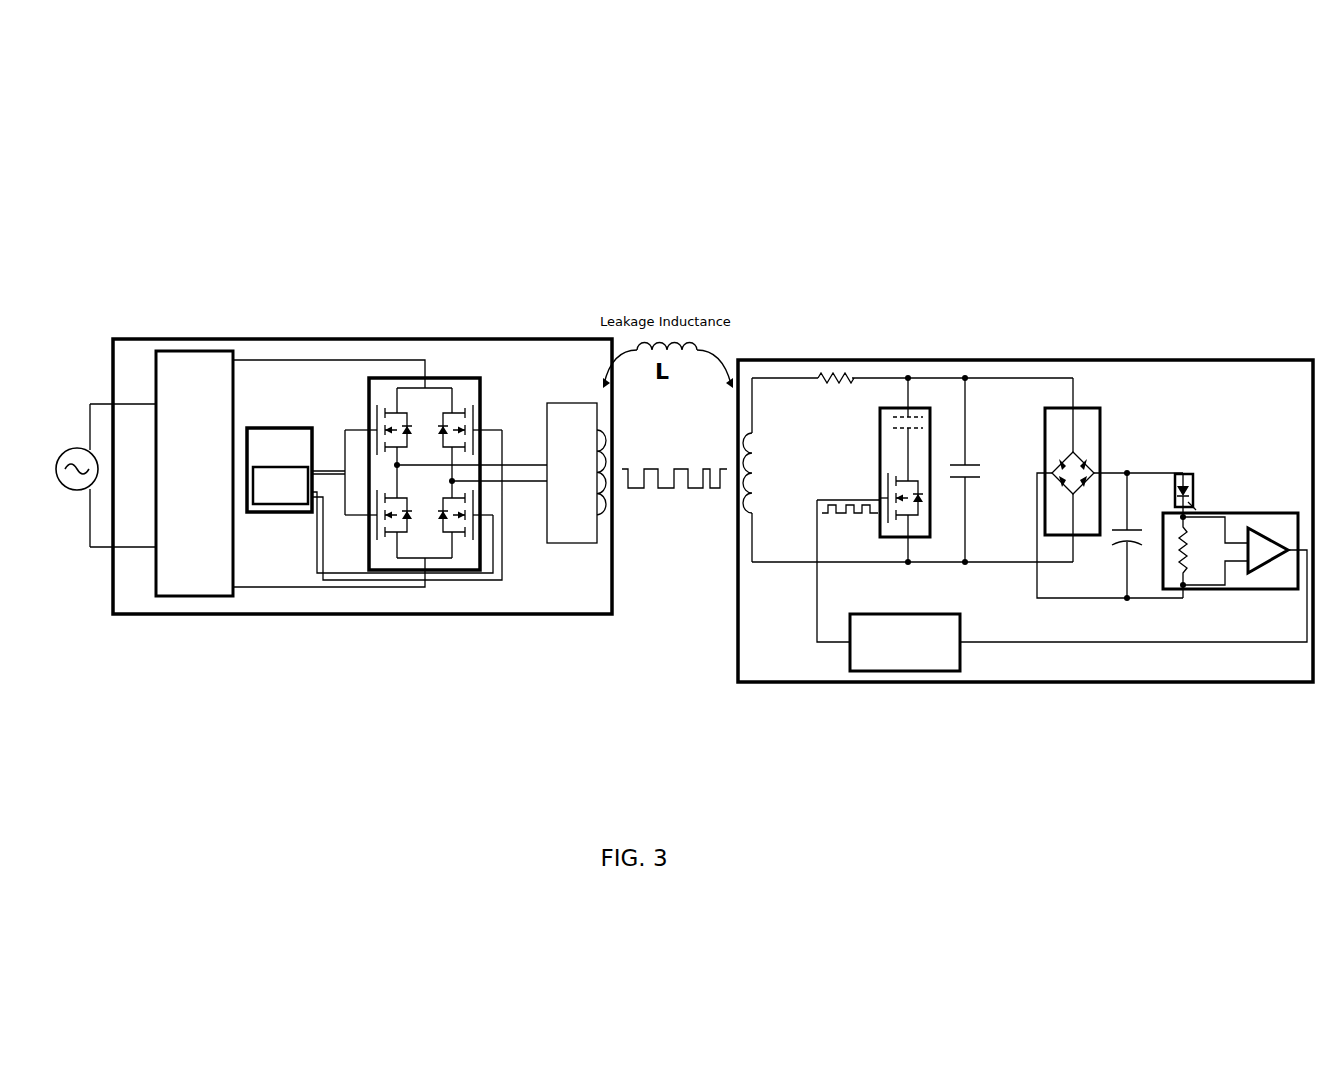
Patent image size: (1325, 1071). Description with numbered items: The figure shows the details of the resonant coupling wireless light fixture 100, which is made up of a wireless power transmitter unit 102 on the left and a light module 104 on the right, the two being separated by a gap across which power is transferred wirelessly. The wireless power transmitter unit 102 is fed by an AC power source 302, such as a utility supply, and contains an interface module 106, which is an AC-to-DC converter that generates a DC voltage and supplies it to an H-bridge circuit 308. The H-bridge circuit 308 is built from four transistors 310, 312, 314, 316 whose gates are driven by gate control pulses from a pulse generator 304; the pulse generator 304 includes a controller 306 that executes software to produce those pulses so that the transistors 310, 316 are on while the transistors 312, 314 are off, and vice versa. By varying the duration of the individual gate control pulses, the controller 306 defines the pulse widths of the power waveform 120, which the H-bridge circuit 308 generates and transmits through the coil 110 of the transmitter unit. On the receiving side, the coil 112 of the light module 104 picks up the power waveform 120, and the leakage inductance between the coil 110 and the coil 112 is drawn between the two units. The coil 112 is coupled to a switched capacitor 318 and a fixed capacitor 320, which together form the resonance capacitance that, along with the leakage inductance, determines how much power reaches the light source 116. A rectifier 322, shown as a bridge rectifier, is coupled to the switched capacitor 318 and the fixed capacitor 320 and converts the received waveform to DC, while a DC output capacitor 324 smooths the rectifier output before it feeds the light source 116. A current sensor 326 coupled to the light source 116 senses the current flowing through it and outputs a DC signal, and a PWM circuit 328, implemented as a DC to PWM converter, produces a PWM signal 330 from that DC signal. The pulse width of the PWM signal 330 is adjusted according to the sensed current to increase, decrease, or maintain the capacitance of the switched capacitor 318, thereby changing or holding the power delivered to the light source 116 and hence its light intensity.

The resonant coupling wireless light fixture 100 is at (168, 196).
The wireless power transmitter unit 102 is at (150, 338).
The light module 104 is at (788, 360).
The interface module 106 is at (222, 351).
The coil 110 is at (598, 494).
The coil 112 is at (748, 436).
The light source 116 is at (1192, 472).
The power waveform 120 is at (697, 485).
The AC power source 302 is at (78, 487).
The pulse generator 304 is at (297, 428).
The controller 306 is at (277, 504).
The H-bridge circuit 308 is at (437, 377).
The transistor 310 is at (392, 408).
The transistor 312 is at (390, 540).
The transistor 314 is at (458, 410).
The transistor 316 is at (462, 540).
The switched capacitor 318 is at (912, 408).
The fixed capacitor 320 is at (975, 465).
The rectifier 322 is at (1090, 408).
The DC output capacitor 324 is at (1140, 530).
The current sensor 326 is at (1243, 589).
The PWM circuit 328 is at (943, 670).
The PWM signal 330 is at (838, 513).